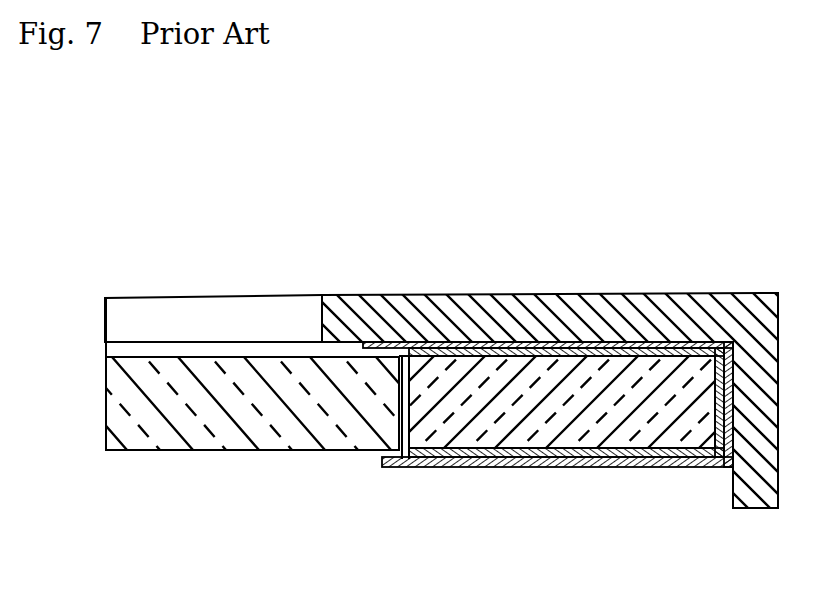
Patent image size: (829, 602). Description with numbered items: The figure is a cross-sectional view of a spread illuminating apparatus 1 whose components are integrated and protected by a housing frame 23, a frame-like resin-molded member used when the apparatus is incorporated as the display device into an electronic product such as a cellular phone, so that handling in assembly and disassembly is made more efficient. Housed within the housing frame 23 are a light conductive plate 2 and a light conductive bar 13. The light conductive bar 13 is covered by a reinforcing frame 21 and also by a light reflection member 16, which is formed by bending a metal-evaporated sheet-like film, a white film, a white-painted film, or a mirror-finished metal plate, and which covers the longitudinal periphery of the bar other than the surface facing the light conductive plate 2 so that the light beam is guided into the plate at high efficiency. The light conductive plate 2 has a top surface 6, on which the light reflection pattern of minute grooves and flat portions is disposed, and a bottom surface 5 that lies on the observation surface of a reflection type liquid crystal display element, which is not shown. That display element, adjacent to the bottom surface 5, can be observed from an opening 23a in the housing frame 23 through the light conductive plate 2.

The spread illuminating apparatus 1 is at (433, 219).
The light conductive plate 2 is at (260, 420).
The bottom surface 5 is at (161, 452).
The top surface 6 is at (165, 360).
The light conductive bar 13 is at (575, 423).
The light reflection member 16 is at (663, 467).
The reinforcing frame 21 is at (462, 467).
The housing frame 23 is at (582, 293).
The opening 23a is at (272, 297).